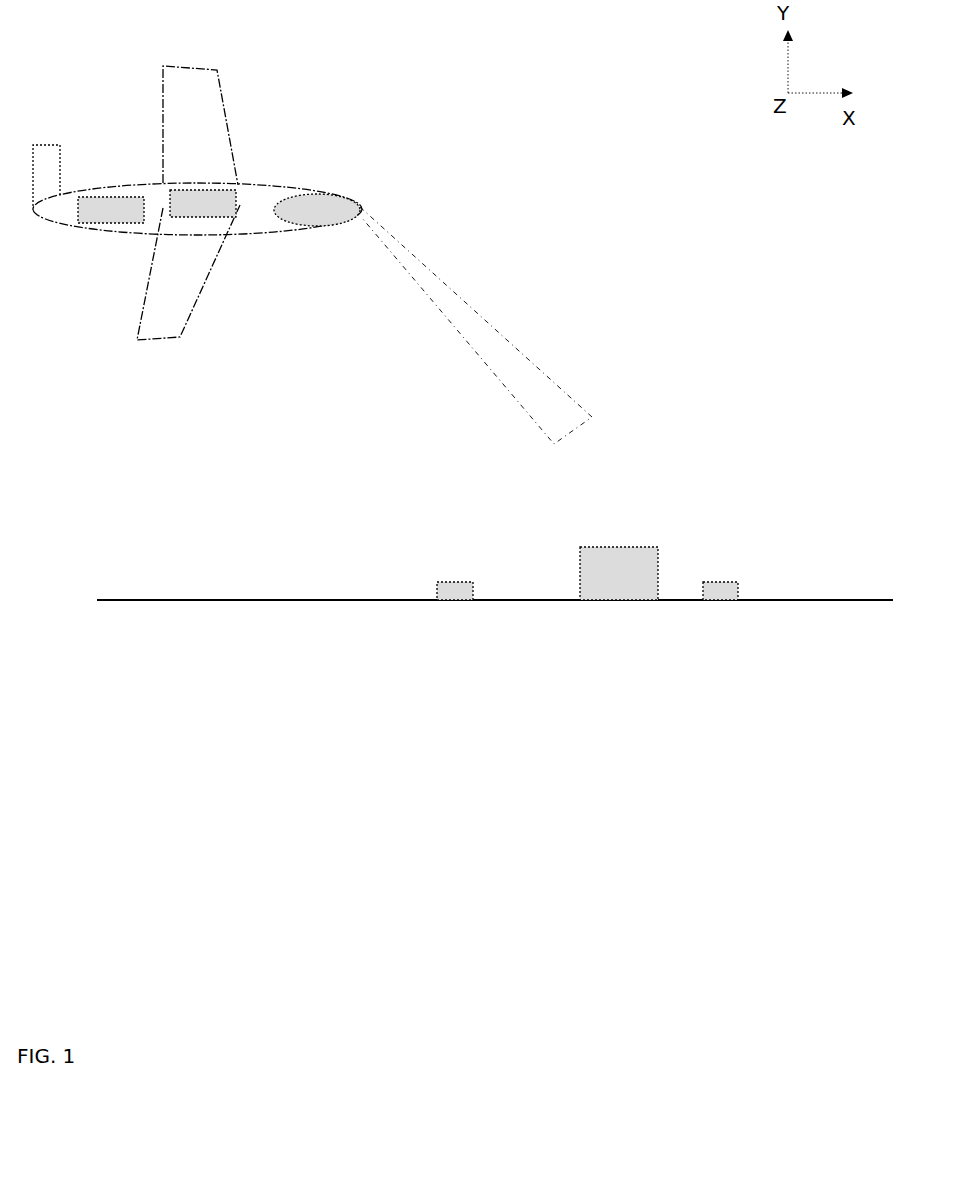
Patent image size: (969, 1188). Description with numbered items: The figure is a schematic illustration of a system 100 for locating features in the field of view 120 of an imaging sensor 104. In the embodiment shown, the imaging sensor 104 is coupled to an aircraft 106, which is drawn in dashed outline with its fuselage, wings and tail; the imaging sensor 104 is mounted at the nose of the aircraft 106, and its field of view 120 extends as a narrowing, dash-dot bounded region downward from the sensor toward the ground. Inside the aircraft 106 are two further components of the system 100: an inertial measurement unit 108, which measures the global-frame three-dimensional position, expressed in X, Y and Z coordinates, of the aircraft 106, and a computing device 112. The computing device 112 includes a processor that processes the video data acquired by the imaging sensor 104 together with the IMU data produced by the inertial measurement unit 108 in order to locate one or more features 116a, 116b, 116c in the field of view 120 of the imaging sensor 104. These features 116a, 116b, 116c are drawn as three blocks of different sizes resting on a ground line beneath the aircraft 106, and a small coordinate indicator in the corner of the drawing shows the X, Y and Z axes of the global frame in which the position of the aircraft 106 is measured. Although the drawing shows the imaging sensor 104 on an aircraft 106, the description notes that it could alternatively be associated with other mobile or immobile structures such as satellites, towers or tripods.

The system 100 is at (626, 180).
The imaging sensor 104 is at (338, 193).
The aircraft 106 is at (265, 233).
The inertial measurement unit 108 is at (237, 207).
The computing device 112 is at (112, 197).
The feature 116a is at (450, 582).
The feature 116b is at (615, 545).
The feature 116c is at (727, 582).
The field of view 120 is at (518, 352).